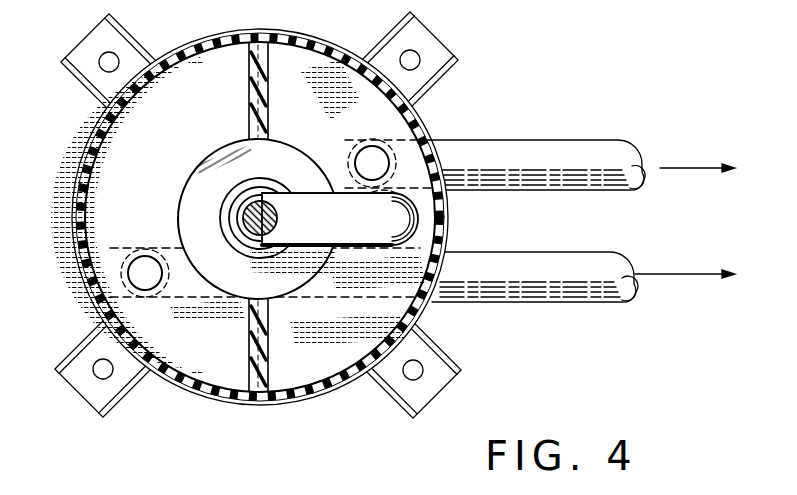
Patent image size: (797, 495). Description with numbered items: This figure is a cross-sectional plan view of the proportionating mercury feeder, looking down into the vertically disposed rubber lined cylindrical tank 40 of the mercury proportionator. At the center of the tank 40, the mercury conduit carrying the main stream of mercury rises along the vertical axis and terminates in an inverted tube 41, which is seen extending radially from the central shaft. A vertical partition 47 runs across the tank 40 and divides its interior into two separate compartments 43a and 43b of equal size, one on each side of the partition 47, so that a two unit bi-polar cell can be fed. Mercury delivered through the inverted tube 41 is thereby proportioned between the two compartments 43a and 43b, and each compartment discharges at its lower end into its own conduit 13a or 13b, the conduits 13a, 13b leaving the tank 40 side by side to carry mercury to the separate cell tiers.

The cylindrical tank 40 is at (83, 152).
The vertical partition 47 is at (250, 97).
The inverted tube 41 is at (317, 207).
The compartment 43a is at (377, 312).
The compartment 43b is at (120, 232).
The conduit 13a is at (558, 123).
The conduit 13b is at (553, 302).